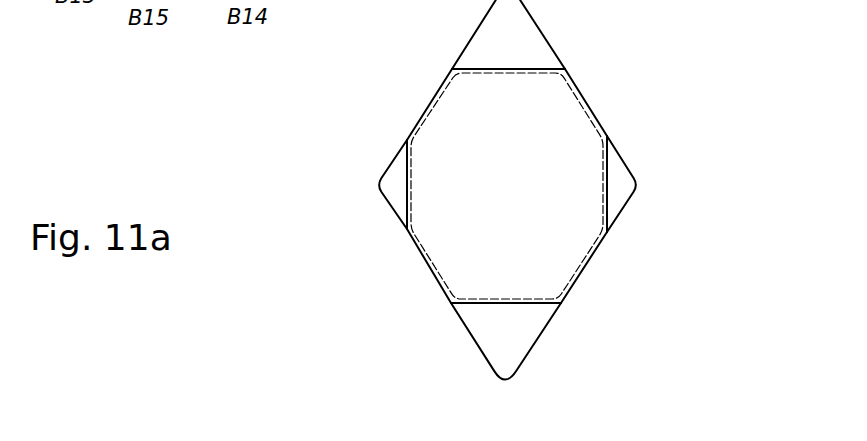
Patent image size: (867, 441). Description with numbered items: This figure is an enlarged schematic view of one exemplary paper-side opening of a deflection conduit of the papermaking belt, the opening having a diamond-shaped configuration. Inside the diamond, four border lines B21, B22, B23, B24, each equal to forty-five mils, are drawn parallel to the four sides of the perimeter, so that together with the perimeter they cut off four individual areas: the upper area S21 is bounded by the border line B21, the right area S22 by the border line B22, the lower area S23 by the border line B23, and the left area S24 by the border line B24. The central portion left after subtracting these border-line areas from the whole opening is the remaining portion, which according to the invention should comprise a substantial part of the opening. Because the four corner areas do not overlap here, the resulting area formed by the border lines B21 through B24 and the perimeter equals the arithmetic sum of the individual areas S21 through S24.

The individual area S21 is at (523, 55).
The individual area S22 is at (622, 189).
The individual area S23 is at (532, 347).
The individual area S24 is at (393, 190).
The border line B21 is at (531, 84).
The border line B22 is at (593, 208).
The border line B23 is at (536, 287).
The border line B24 is at (421, 213).